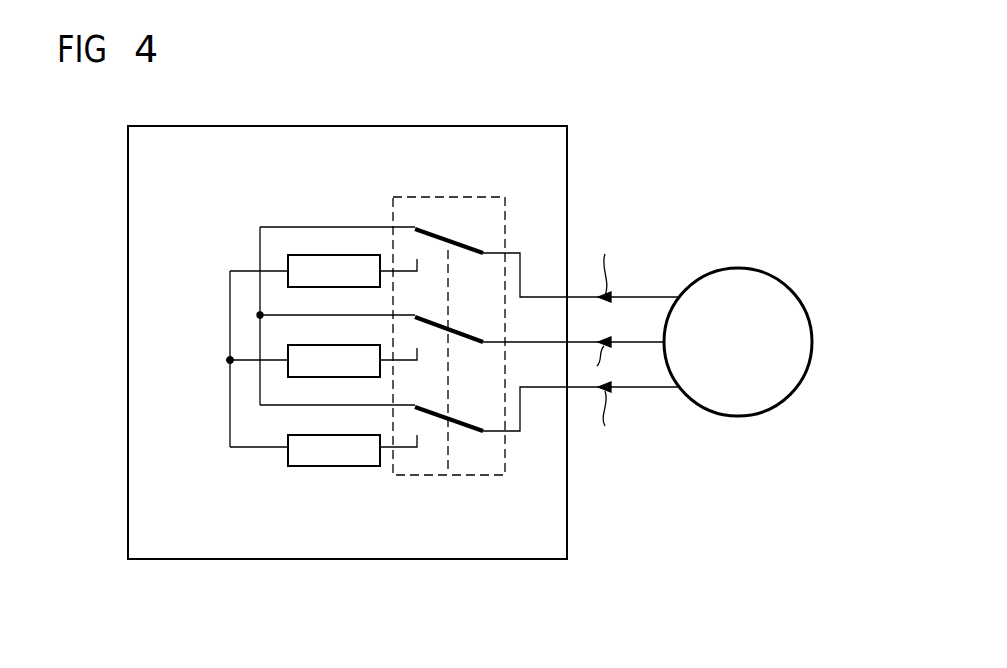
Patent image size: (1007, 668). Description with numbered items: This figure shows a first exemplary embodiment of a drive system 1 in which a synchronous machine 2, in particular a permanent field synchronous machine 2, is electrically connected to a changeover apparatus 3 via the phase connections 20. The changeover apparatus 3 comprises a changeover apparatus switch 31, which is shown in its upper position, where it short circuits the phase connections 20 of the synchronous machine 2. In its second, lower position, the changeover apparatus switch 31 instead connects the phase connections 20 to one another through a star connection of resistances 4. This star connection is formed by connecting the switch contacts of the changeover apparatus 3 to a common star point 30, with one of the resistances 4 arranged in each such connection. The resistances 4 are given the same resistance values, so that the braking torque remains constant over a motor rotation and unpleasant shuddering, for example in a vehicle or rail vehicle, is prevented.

The drive system 1 is at (318, 100).
The synchronous machine 2 is at (738, 267).
The changeover apparatus 3 is at (567, 517).
The resistances 4 is at (318, 255).
The phase connections 20 is at (660, 296).
The star point 30 is at (230, 360).
The changeover apparatus switch 31 is at (465, 197).